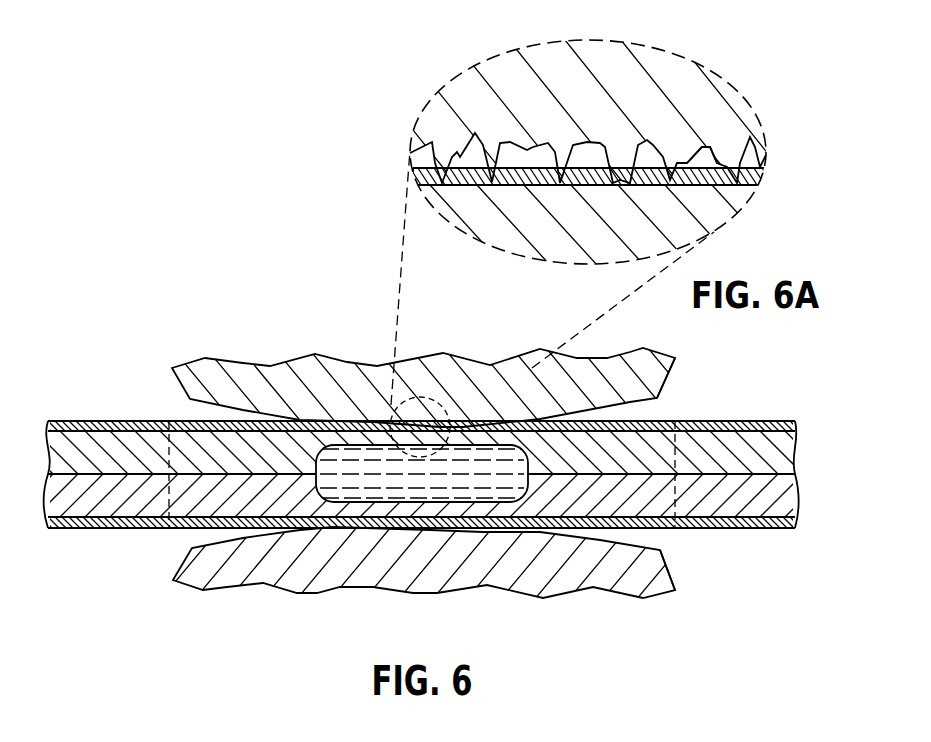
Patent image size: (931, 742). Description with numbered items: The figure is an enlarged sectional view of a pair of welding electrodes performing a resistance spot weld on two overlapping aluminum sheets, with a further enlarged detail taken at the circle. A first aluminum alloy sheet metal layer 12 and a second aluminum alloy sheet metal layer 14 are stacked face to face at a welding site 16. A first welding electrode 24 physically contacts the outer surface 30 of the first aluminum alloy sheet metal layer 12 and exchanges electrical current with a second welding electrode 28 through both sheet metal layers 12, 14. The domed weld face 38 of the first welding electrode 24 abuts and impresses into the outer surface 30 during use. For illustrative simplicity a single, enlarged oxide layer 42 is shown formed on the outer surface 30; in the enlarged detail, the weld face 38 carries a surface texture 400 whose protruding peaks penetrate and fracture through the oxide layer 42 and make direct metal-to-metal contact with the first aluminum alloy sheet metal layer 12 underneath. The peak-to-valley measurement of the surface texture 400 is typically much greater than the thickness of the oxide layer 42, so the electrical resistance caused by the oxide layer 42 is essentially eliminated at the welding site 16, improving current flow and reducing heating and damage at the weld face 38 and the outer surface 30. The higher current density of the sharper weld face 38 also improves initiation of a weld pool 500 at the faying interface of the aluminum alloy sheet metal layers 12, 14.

In FIG. 6, the first aluminum alloy sheet metal layer 12 is at (90, 453).
In FIG. 6A, the first aluminum alloy sheet metal layer 12 is at (682, 218).
In FIG. 6, the second aluminum alloy sheet metal layer 14 is at (72, 493).
In FIG. 6, the welding site 16 is at (675, 457).
In FIG. 6, the first welding electrode 24 is at (242, 371).
In FIG. 6A, the first welding electrode 24 is at (617, 85).
In FIG. 6, the second welding electrode 28 is at (255, 573).
In FIG. 6, the outer surface 30 is at (65, 422).
In FIG. 6, the weld face 38 is at (660, 408).
In FIG. 6A, the weld face 38 is at (700, 153).
In FIG. 6, the oxide layer 42 is at (133, 428).
In FIG. 6A, the oxide layer 42 is at (766, 177).
In FIG. 6A, the surface texture 400 is at (470, 150).
In FIG. 6, the weld pool 500 is at (473, 499).